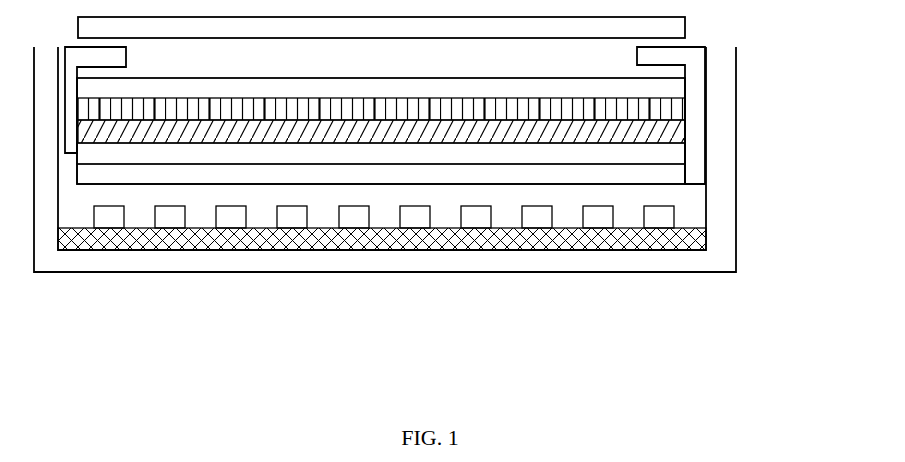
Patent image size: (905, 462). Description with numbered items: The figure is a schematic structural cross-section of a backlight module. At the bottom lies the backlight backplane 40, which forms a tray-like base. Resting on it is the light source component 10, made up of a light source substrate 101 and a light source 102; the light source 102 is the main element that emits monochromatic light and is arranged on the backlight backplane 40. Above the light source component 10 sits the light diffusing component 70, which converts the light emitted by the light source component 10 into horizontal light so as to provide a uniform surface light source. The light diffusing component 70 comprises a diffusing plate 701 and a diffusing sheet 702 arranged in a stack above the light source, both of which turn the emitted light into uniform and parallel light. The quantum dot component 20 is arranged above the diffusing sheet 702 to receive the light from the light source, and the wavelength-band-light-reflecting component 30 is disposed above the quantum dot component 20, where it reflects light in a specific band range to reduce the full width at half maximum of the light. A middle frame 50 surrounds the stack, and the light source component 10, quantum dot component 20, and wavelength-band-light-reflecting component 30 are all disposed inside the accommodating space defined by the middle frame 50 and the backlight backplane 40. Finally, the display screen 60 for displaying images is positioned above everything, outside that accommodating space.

The light source component 10 is at (382, 297).
The light source substrate 101 is at (623, 237).
The light source 102 is at (535, 216).
The quantum dot component 20 is at (668, 137).
The wavelength-band-light-reflecting component 30 is at (663, 115).
The backlight backplane 40 is at (450, 263).
The middle frame 50 is at (688, 60).
The display screen 60 is at (685, 28).
The light diffusing component 70 is at (447, 230).
The diffusing plate 701 is at (223, 175).
The diffusing sheet 702 is at (120, 157).